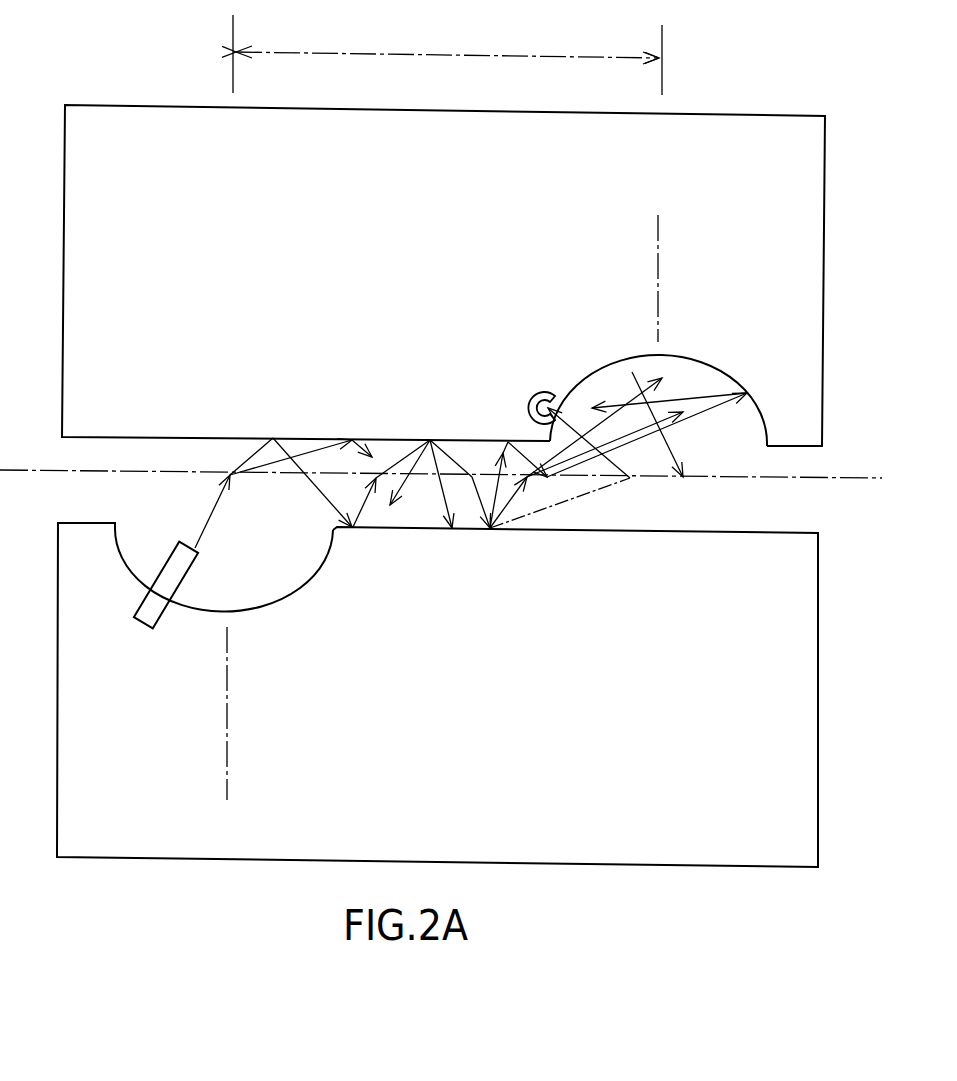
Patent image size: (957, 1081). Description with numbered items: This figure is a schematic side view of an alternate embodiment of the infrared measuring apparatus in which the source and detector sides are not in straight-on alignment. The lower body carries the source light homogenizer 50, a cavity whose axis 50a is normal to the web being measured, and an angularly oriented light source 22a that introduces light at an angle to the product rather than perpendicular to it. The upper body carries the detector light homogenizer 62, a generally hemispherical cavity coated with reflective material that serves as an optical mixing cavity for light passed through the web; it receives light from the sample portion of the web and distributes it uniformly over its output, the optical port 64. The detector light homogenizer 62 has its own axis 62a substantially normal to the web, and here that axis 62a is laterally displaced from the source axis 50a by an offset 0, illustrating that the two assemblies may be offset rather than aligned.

The offset 0 is at (422, 53).
The angularly oriented light source 22a is at (137, 623).
The source light homogenizer 50 is at (300, 590).
The source light homogenizer axis 50a is at (228, 706).
The detector light homogenizer 62 is at (703, 362).
The detector light homogenizer axis 62a is at (657, 246).
The optical port 64 is at (529, 404).